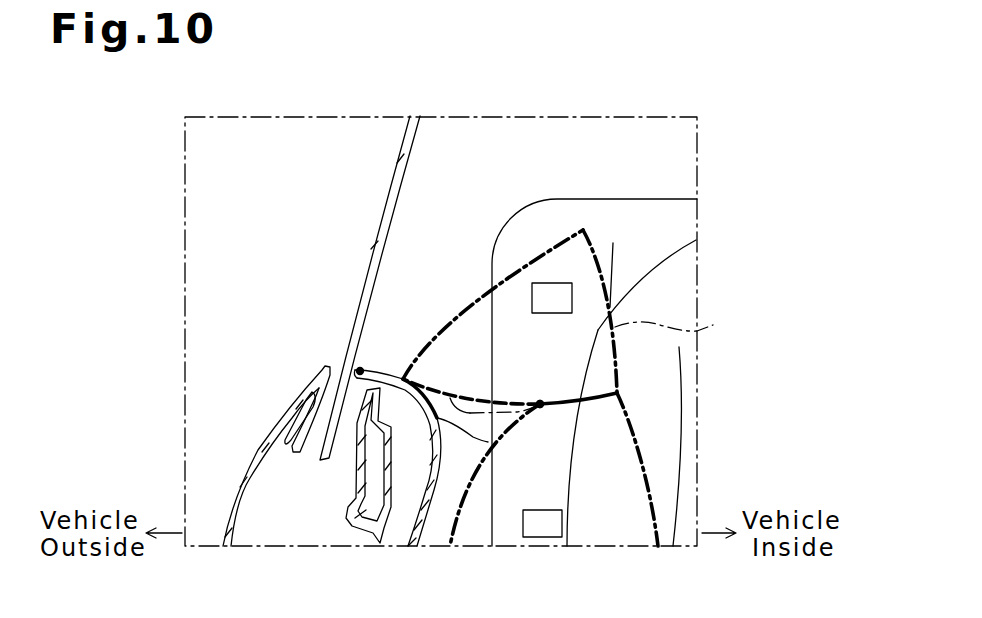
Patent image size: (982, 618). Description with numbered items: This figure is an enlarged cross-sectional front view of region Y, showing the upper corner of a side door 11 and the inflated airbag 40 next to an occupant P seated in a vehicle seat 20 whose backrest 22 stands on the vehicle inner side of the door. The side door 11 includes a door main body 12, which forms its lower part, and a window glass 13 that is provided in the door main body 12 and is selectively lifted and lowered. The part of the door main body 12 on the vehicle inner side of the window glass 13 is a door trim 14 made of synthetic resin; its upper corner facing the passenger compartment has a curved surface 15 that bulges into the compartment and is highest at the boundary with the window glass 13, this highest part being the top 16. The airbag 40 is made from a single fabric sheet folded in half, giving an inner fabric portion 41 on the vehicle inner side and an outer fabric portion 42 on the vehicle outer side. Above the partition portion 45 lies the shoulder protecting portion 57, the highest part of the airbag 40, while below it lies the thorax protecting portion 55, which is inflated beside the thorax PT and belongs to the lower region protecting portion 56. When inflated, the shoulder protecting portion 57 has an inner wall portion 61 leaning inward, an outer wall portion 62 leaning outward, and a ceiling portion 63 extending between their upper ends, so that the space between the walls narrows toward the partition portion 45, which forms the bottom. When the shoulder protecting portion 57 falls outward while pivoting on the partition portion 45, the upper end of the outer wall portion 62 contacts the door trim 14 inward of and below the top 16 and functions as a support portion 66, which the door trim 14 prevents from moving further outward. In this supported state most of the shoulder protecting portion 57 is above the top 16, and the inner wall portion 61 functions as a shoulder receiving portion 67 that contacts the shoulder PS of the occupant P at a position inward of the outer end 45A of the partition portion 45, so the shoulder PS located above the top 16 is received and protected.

The side door 11 is at (262, 456).
The door main body 12 is at (220, 500).
The window glass 13 is at (383, 201).
The door trim 14 is at (422, 547).
The curved surface 15 is at (488, 442).
The top 16 is at (357, 369).
The vehicle seat 20 is at (594, 347).
The backrest 22 is at (675, 175).
The airbag 40 is at (647, 472).
The fabric portion 41 is at (650, 524).
The fabric portion 42 is at (463, 528).
The partition portion 45 is at (593, 405).
The end of the partition portion 45A is at (540, 402).
The thorax protecting portion 55 is at (542, 524).
The lower region protecting portion 56 is at (570, 524).
The shoulder protecting portion 57 is at (574, 311).
The inner wall portion 61 is at (712, 326).
The outer wall portion 62 is at (510, 408).
The ceiling portion 63 is at (440, 330).
The support portion 66 is at (403, 378).
The shoulder receiving portion 67 is at (712, 326).
The occupant P is at (647, 267).
The shoulder PS is at (679, 231).
The thorax PT is at (699, 446).
The region Y is at (185, 329).